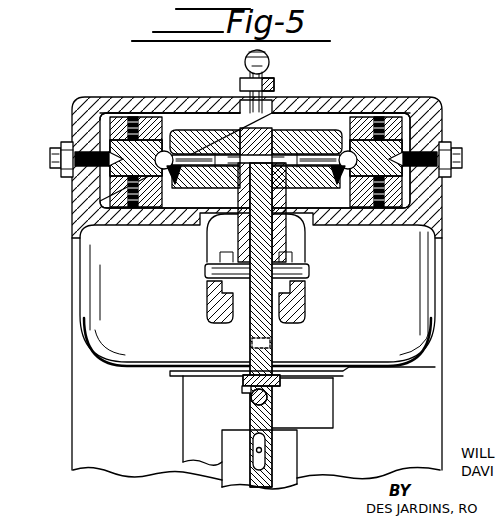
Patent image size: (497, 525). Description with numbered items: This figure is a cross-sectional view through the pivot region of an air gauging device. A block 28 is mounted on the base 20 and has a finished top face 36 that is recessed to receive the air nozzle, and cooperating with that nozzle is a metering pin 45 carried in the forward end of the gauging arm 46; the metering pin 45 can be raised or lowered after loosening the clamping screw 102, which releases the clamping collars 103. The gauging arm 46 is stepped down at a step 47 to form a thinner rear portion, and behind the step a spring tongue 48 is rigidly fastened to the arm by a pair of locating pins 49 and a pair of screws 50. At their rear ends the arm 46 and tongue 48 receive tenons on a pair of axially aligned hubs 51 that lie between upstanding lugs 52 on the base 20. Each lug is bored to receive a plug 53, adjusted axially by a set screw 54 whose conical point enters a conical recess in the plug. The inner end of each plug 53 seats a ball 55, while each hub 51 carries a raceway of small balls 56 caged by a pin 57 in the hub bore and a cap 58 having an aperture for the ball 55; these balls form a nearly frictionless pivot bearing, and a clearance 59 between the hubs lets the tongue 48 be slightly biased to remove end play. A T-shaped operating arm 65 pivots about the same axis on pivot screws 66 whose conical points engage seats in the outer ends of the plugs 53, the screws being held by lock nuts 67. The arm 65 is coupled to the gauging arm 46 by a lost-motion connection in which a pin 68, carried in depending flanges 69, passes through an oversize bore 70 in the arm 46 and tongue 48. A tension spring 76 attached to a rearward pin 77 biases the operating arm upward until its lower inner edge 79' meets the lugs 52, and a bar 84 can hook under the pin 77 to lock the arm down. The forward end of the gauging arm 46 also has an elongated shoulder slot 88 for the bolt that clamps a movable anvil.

The base 20 is at (425, 307).
The block 28 is at (334, 412).
The finished face 36 is at (326, 393).
The metering pin 45 is at (267, 397).
The gauging arm 46 is at (260, 480).
The step 47 is at (242, 362).
The spring tongue 48 is at (243, 216).
The locating pins 49 is at (273, 328).
The screws 50 is at (270, 346).
The hubs 51 is at (295, 122).
The upstanding lugs 52 is at (121, 117).
The plugs 53 is at (108, 172).
The set screws 54 is at (388, 120).
The ball 55 is at (176, 134).
The small balls 56 is at (175, 173).
The pin 57 is at (203, 168).
The cap 58 is at (170, 170).
The clearance 59 is at (263, 133).
The operating arm 65 is at (427, 195).
The pivot screws 66 is at (52, 158).
The lock nuts 67 is at (67, 142).
The pin 68 is at (208, 272).
The flanges 69 is at (208, 309).
The bore 70 is at (272, 241).
The tension spring 76 is at (244, 62).
The pin 77 is at (266, 58).
The lower inner edge 79' is at (255, 93).
The bar 84 is at (274, 85).
The shoulder slot 88 is at (262, 450).
The clamping screw 102 is at (276, 381).
The clamping collars 103 is at (242, 392).